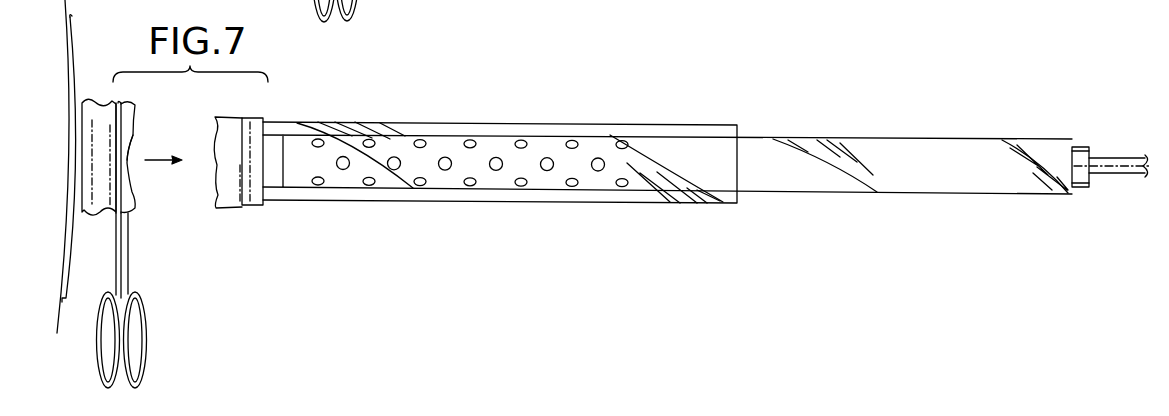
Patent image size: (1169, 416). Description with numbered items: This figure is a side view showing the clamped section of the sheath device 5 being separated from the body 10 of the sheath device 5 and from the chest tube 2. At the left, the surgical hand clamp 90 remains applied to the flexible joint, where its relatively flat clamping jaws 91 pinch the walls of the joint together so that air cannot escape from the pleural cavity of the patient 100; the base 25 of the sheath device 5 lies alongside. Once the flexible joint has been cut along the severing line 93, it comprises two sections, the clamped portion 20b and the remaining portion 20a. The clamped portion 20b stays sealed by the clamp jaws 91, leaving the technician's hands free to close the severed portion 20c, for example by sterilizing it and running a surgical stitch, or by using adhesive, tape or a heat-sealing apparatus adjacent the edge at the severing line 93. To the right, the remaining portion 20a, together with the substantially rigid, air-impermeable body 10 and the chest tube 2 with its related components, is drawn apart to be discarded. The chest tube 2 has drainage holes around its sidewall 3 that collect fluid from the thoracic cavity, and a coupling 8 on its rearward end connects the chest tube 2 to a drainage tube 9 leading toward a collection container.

The chest tube 2 is at (969, 139).
The sidewall 3 is at (918, 170).
The sheath device 5 is at (598, 107).
The coupling 8 is at (1082, 178).
The drainage tube 9 is at (1111, 163).
The body 10 is at (583, 203).
The remaining portion of the flexible joint 20a is at (228, 185).
The clamped portion of the flexible joint 20b is at (88, 119).
The severed portion 20c is at (127, 185).
The base 25 is at (72, 52).
The surgical hand clamp 90 is at (147, 357).
The clamping jaws 91 is at (120, 128).
The severing line 93 is at (132, 147).
The patient 100 is at (48, 186).